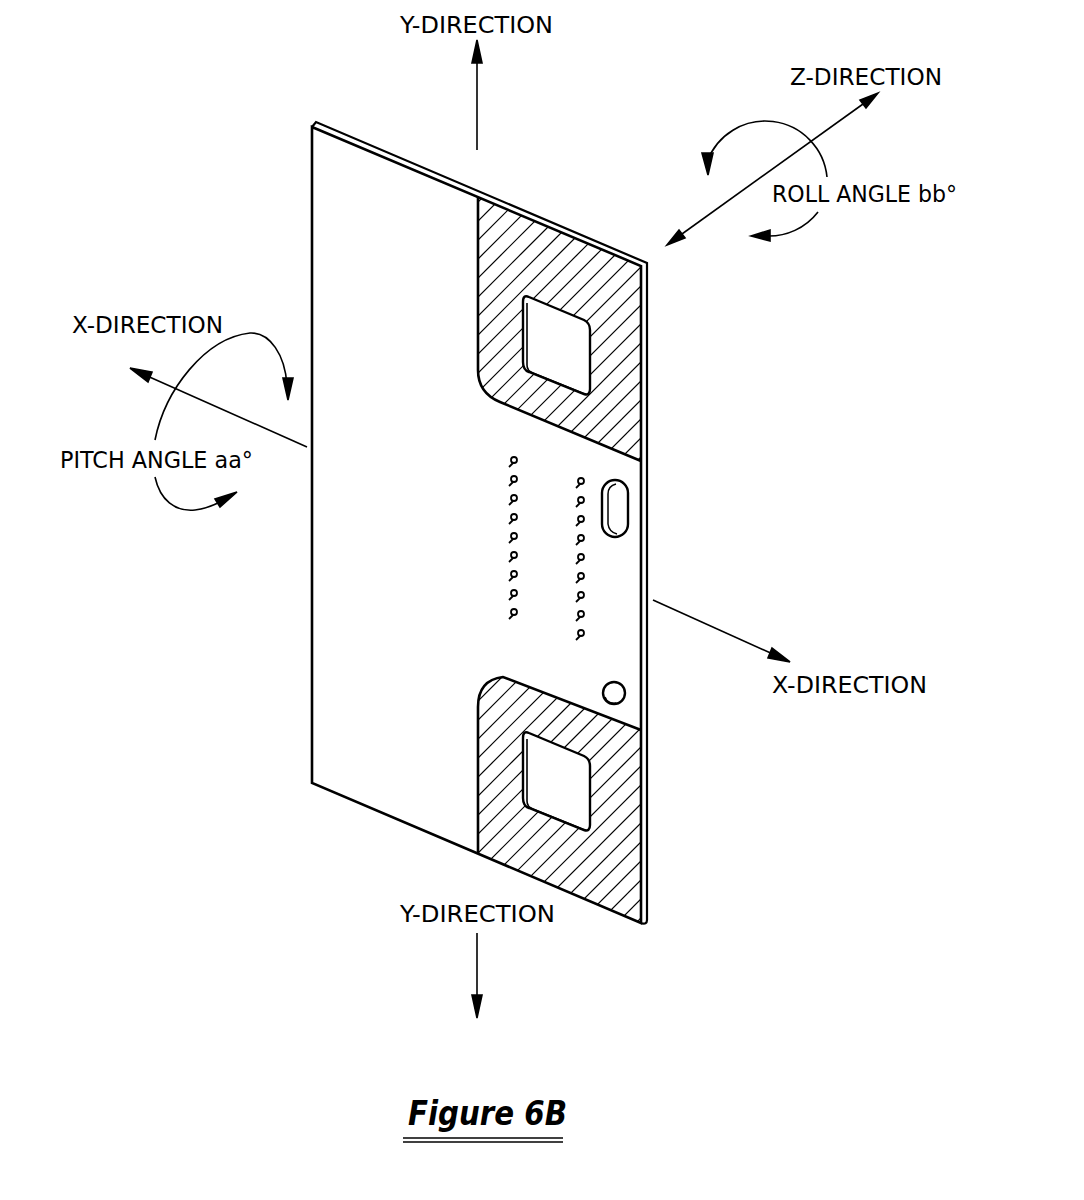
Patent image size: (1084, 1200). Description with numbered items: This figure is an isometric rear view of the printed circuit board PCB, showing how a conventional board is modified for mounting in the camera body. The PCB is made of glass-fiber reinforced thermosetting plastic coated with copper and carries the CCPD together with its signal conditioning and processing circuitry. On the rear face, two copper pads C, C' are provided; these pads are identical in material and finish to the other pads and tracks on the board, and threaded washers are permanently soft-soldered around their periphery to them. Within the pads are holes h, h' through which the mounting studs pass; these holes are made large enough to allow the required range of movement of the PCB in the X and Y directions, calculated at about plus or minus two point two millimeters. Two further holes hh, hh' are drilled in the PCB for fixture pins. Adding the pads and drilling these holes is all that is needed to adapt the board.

The printed circuit board PCB is at (322, 625).
The copper pad C is at (607, 329).
The copper pad C' is at (616, 800).
The hole h is at (615, 344).
The hole h' is at (629, 781).
The hole hh is at (668, 500).
The hole hh' is at (680, 707).